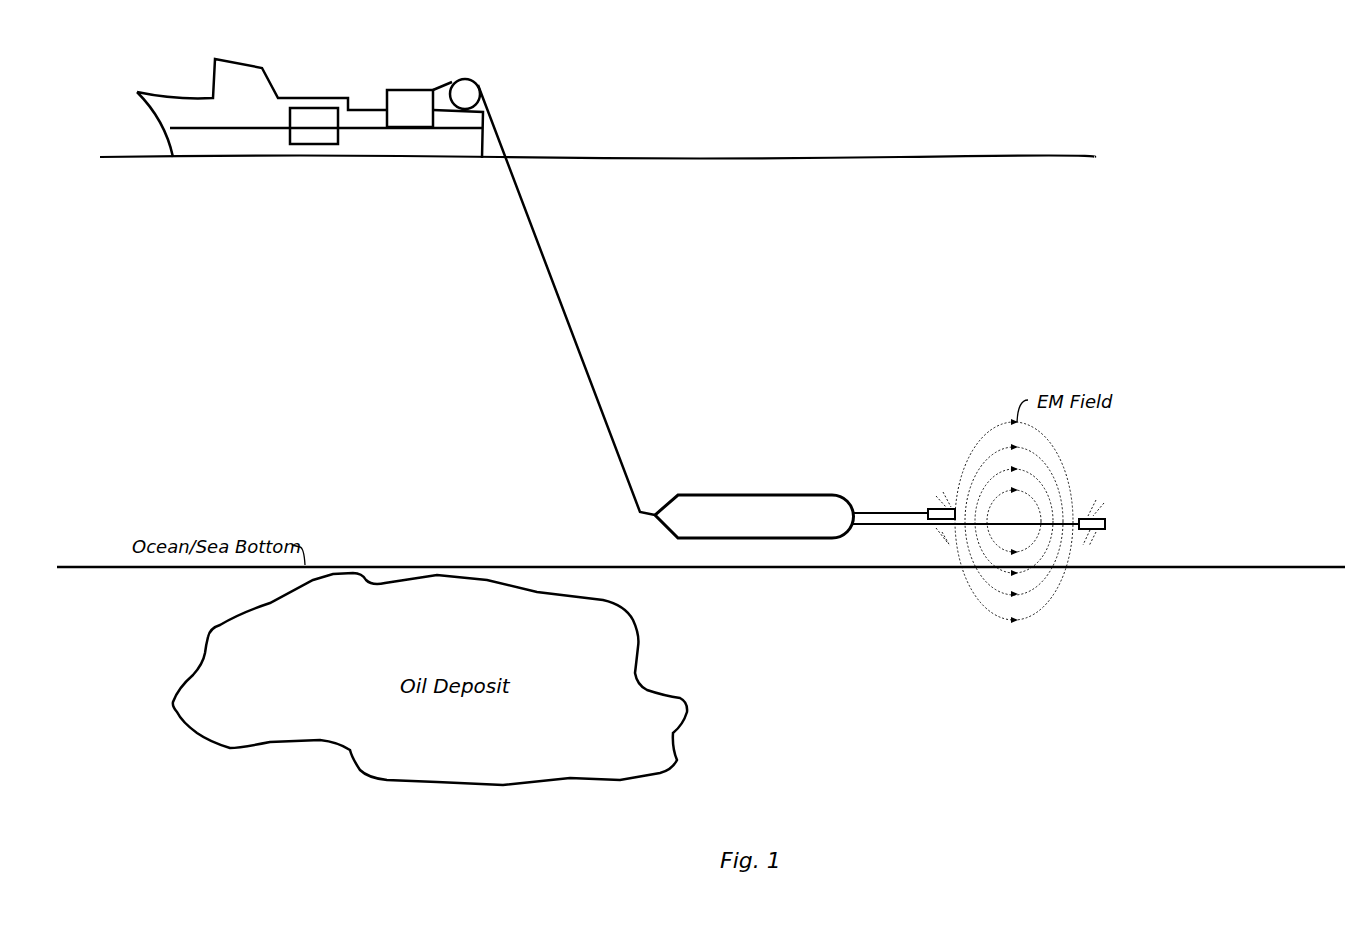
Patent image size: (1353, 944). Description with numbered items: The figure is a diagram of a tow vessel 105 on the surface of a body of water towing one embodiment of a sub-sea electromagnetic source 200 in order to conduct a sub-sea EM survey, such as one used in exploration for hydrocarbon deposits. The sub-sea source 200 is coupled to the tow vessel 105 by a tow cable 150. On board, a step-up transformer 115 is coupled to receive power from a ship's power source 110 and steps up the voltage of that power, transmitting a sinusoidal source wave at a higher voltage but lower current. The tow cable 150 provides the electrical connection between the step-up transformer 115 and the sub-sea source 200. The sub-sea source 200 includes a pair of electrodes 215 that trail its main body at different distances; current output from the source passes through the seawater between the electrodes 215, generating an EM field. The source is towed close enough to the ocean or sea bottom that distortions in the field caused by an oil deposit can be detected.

The tow vessel 105 is at (218, 59).
The ship's power source 110 is at (322, 144).
The step-up transformer 115 is at (407, 90).
The tow cable 150 is at (545, 257).
The sub-sea EM source 200 is at (768, 495).
The electrodes 215 is at (928, 508).